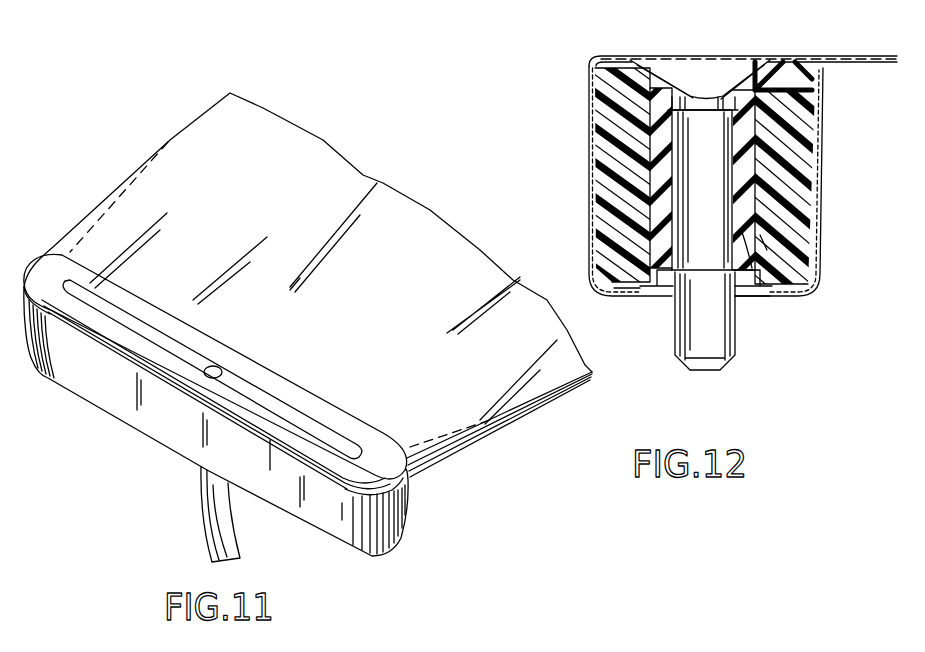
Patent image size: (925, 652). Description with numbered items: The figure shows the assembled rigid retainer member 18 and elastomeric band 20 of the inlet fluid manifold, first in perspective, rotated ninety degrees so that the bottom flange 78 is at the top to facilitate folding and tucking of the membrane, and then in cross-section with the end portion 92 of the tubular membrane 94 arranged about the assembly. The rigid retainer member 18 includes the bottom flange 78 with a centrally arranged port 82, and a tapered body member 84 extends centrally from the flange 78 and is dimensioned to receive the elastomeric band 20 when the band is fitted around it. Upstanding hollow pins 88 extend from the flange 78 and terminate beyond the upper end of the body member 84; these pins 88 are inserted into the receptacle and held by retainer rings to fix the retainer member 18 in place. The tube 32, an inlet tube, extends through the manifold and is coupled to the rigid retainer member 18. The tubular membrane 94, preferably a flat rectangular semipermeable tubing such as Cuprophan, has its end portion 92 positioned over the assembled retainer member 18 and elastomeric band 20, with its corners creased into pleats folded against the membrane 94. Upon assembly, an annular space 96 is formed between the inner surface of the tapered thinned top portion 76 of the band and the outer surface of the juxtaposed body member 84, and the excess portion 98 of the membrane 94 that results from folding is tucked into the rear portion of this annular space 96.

In FIG. 11, the rigid retainer member 18 is at (136, 357).
In FIG. 12, the rigid retainer member 18 is at (652, 148).
In FIG. 11, the elastomeric band 20 is at (416, 519).
In FIG. 12, the elastomeric band 20 is at (822, 197).
In FIG. 11, the tube 32 is at (200, 494).
In FIG. 12, the tapered thinned top portion 76 is at (792, 280).
In FIG. 12, the bottom flange 78 is at (790, 70).
In FIG. 12, the port 82 is at (720, 92).
In FIG. 12, the tapered body member 84 is at (757, 284).
In FIG. 12, the hollow pins 88 is at (732, 344).
In FIG. 11, the end portion 92 is at (378, 557).
In FIG. 12, the end portion 92 is at (598, 70).
In FIG. 11, the tubular membrane 94 is at (371, 294).
In FIG. 12, the tubular membrane 94 is at (890, 55).
In FIG. 12, the annular space 96 is at (648, 240).
In FIG. 12, the excess portion 98 is at (762, 262).